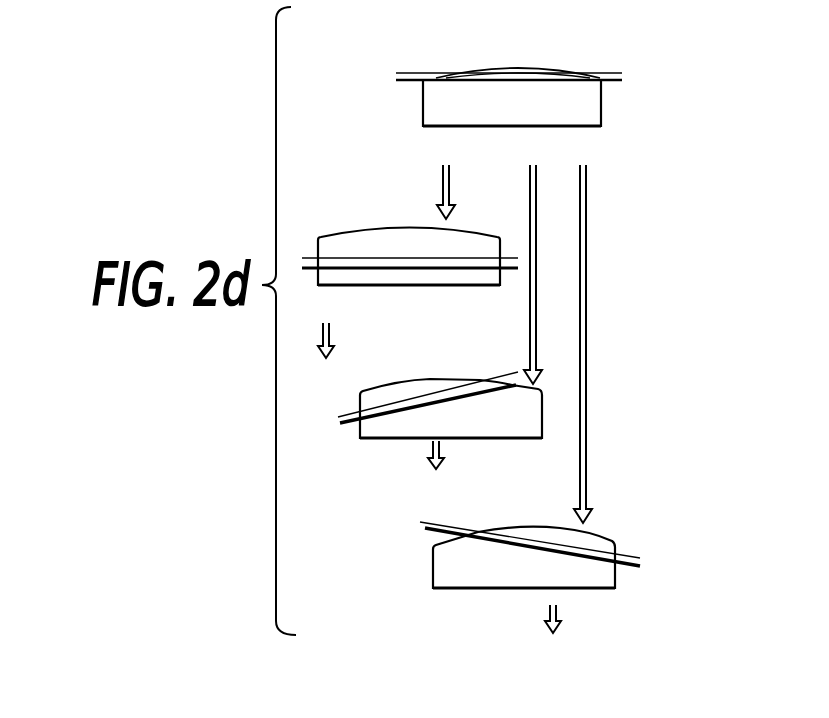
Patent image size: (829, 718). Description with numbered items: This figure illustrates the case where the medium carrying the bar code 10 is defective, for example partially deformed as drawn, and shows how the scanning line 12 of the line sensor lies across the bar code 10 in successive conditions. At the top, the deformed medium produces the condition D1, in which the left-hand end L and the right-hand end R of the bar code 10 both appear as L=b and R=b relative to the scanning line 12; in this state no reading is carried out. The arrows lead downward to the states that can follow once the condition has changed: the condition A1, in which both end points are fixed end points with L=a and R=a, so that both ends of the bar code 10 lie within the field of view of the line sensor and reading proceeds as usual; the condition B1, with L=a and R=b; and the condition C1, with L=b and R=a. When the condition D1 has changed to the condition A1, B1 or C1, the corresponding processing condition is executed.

The bar code 10 is at (603, 98).
The scanning line 12 is at (603, 73).
The condition D1 is at (503, 283).
The condition A1 is at (409, 345).
The condition B1 is at (429, 472).
The condition C1 is at (539, 637).